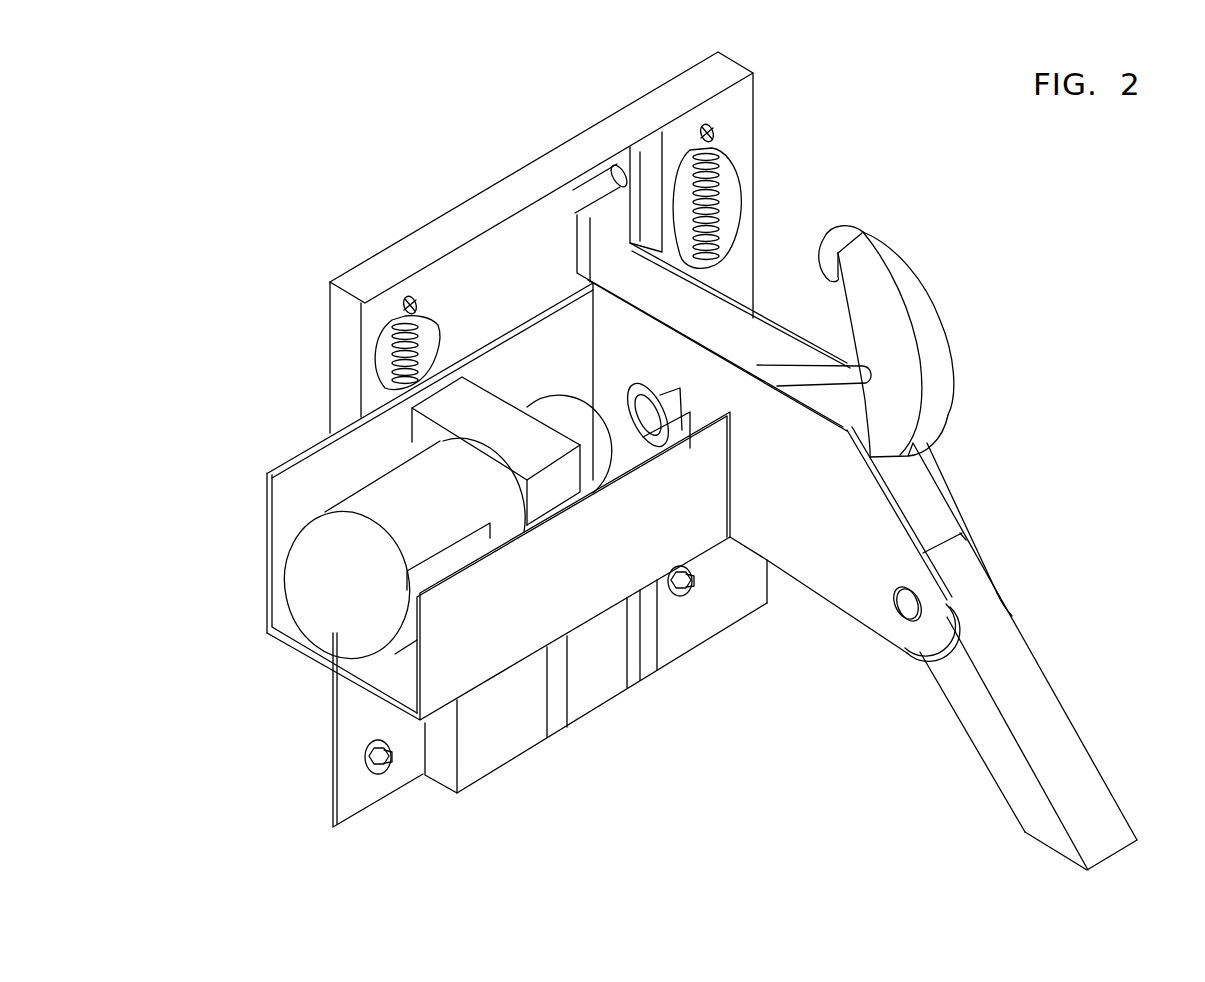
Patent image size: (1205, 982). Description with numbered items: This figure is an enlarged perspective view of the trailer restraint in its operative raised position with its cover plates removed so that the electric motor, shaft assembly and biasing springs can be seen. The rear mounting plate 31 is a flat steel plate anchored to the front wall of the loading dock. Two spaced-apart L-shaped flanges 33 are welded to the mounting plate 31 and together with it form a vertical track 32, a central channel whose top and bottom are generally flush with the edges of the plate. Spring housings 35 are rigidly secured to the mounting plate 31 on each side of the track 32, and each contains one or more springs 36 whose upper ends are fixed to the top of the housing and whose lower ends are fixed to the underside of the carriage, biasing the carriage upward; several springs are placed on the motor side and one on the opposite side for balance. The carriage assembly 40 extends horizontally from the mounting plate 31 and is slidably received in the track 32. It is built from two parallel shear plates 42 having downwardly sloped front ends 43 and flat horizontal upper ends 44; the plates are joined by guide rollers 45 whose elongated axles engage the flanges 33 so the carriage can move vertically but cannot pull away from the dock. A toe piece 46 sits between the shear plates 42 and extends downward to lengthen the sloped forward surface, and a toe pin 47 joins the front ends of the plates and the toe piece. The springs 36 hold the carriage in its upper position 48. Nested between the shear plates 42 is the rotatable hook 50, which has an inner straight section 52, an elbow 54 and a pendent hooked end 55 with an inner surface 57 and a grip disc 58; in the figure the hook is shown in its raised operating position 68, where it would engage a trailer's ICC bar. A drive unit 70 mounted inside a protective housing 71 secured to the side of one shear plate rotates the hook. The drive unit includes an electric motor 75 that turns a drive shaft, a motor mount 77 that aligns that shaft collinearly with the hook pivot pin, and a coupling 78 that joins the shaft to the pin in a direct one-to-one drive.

The rear mounting plate 31 is at (498, 197).
The vertical track 32 is at (588, 657).
The L-shaped flanges 33 is at (557, 727).
The spring housings 35 is at (412, 285).
The springs 36 is at (385, 355).
The carriage assembly 40 is at (962, 648).
The shear plates 42 is at (940, 473).
The downwardly sloped front ends 43 is at (957, 500).
The flat horizontal upper ends 44 is at (760, 307).
The guide rollers 45 is at (597, 190).
The toe piece 46 is at (1085, 782).
The toe pin 47 is at (903, 610).
The upper position 48 is at (1000, 570).
The rotatable hook 50 is at (920, 277).
The inner straight section 52 is at (830, 403).
The elbow 54 is at (933, 410).
The pendent hooked end 55 is at (910, 300).
The inner surface 57 is at (843, 303).
The grip disc 58 is at (863, 232).
The raised operating position 68 is at (623, 372).
The drive unit 70 is at (607, 495).
The protective housing 71 is at (267, 507).
The electric motor 75 is at (396, 518).
The motor mount 77 is at (459, 433).
The coupling 78 is at (560, 377).